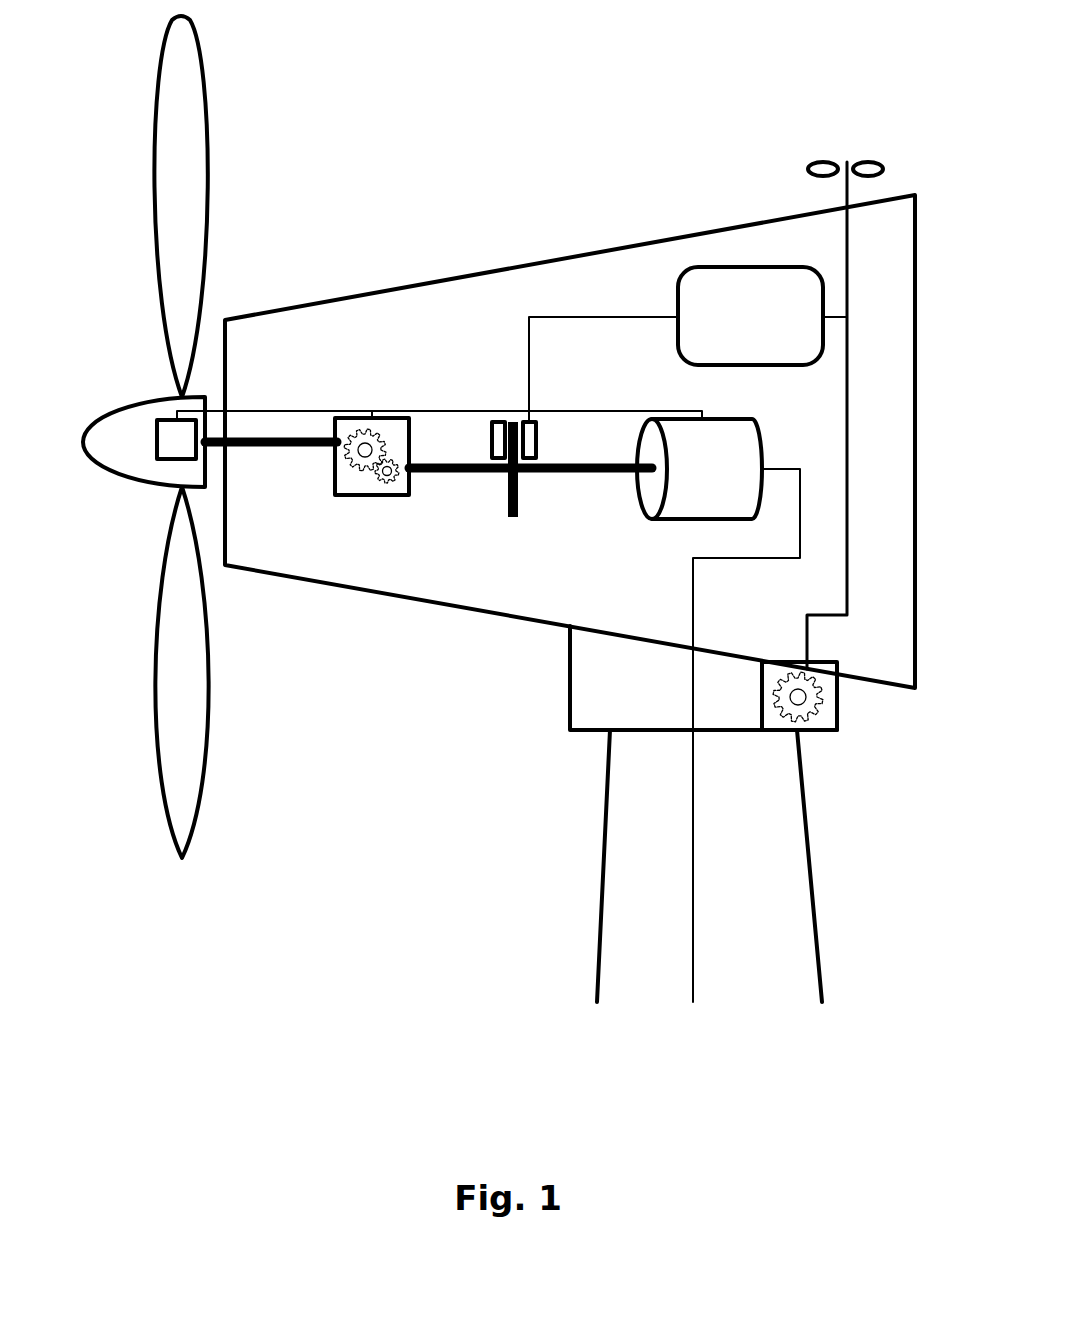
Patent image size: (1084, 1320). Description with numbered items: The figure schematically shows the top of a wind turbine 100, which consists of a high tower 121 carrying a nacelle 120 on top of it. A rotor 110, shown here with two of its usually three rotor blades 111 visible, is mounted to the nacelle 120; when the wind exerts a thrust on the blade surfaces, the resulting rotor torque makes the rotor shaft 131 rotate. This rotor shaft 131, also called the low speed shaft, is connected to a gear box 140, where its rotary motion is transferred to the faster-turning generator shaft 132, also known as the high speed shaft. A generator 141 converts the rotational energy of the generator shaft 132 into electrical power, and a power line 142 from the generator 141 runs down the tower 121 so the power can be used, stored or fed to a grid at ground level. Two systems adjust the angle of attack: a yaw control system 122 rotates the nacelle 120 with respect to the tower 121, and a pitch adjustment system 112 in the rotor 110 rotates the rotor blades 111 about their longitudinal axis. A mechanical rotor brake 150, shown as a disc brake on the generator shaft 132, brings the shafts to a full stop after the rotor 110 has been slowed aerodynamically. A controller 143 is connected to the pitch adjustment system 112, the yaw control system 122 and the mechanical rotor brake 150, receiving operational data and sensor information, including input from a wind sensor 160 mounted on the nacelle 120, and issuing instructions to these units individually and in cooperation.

The wind turbine 100 is at (395, 208).
The rotor 110 is at (107, 470).
The rotor blades 111 is at (207, 717).
The pitch adjustment system 112 is at (157, 442).
The nacelle 120 is at (340, 299).
The tower 121 is at (605, 835).
The yaw control system 122 is at (840, 697).
The rotor shaft 131 is at (255, 447).
The generator shaft 132 is at (585, 477).
The gear box 140 is at (372, 495).
The generator 141 is at (699, 469).
The power line 142 is at (693, 898).
The controller 143 is at (688, 344).
The mechanical rotor brake 150 is at (490, 439).
The wind sensor 160 is at (843, 197).